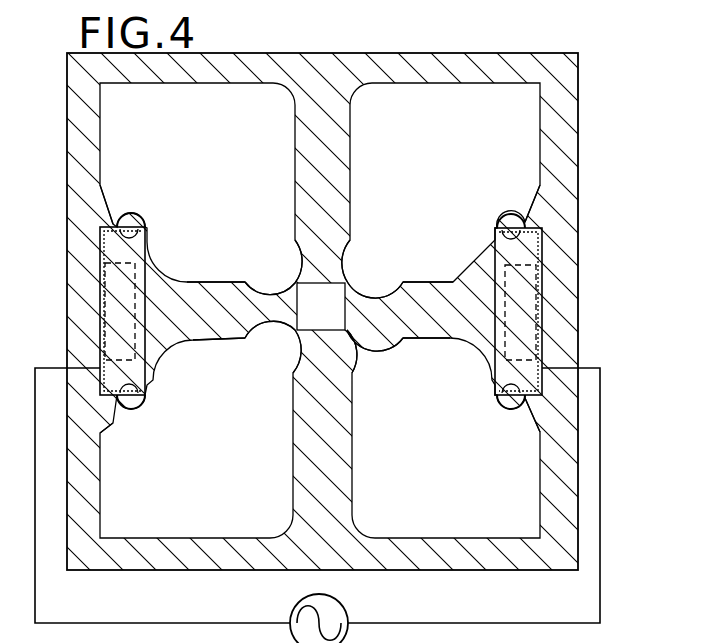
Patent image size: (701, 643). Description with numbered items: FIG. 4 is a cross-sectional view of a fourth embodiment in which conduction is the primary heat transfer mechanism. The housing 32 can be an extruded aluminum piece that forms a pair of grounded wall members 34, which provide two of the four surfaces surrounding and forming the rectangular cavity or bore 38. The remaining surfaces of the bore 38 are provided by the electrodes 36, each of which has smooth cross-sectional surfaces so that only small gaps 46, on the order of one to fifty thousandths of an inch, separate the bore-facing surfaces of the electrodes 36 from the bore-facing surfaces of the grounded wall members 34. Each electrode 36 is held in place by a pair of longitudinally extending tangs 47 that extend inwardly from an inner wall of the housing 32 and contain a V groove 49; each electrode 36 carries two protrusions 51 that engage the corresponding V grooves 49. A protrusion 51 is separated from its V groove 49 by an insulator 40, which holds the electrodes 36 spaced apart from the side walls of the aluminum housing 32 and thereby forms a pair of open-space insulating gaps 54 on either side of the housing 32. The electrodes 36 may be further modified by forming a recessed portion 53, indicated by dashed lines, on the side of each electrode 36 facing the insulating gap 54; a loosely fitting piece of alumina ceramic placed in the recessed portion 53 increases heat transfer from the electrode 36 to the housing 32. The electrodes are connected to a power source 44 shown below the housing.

The housing 32 is at (578, 115).
The grounded wall members 34 is at (352, 168).
The electrodes 36 is at (400, 298).
The rectangular cavity or bore 38 is at (334, 321).
The insulator 40 is at (130, 222).
The AC power source 44 is at (348, 618).
The gaps 46 is at (293, 285).
The tangs 47 is at (143, 222).
The V groove 49 is at (128, 222).
The protrusions 51 is at (145, 240).
The recessed portion 53 is at (115, 285).
The insulating gaps 54 is at (103, 318).